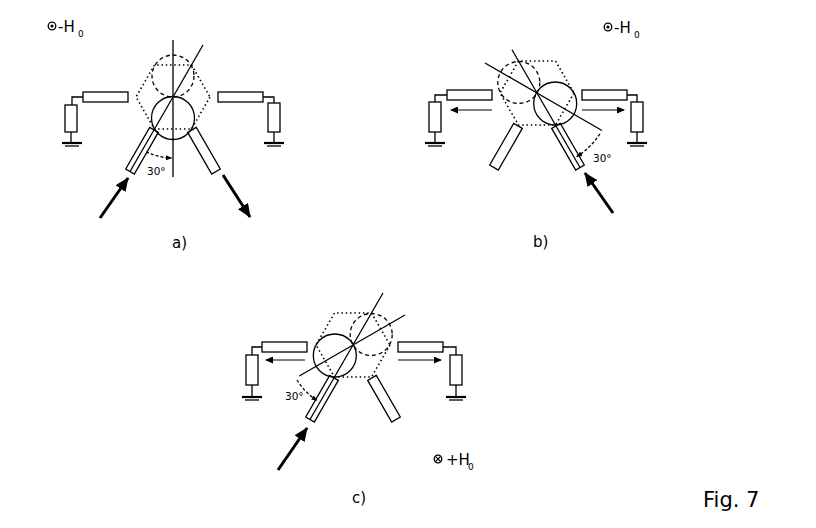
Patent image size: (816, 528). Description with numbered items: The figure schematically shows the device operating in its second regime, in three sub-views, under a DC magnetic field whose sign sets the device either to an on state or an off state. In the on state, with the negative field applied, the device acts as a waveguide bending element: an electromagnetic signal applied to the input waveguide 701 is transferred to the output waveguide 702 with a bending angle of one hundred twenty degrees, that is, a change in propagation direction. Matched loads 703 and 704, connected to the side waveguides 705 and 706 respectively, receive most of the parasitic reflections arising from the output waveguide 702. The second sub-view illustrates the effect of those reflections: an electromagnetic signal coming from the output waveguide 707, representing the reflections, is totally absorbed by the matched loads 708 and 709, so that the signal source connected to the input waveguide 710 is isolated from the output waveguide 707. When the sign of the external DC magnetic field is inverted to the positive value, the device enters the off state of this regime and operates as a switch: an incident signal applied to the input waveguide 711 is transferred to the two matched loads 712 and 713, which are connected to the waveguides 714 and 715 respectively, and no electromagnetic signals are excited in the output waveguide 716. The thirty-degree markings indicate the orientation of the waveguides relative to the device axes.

The input waveguide 701 is at (122, 160).
The output waveguide 702 is at (225, 158).
The matched load 703 is at (62, 107).
The matched load 704 is at (283, 113).
The waveguide 705 is at (110, 88).
The waveguide 706 is at (237, 88).
The output waveguide 707 is at (565, 160).
The matched load 708 is at (427, 123).
The matched load 709 is at (647, 115).
The input waveguide 710 is at (487, 167).
The input waveguide 711 is at (323, 417).
The matched load 712 is at (242, 360).
The matched load 713 is at (470, 358).
The waveguide 714 is at (288, 337).
The waveguide 715 is at (420, 335).
The output waveguide 716 is at (402, 405).